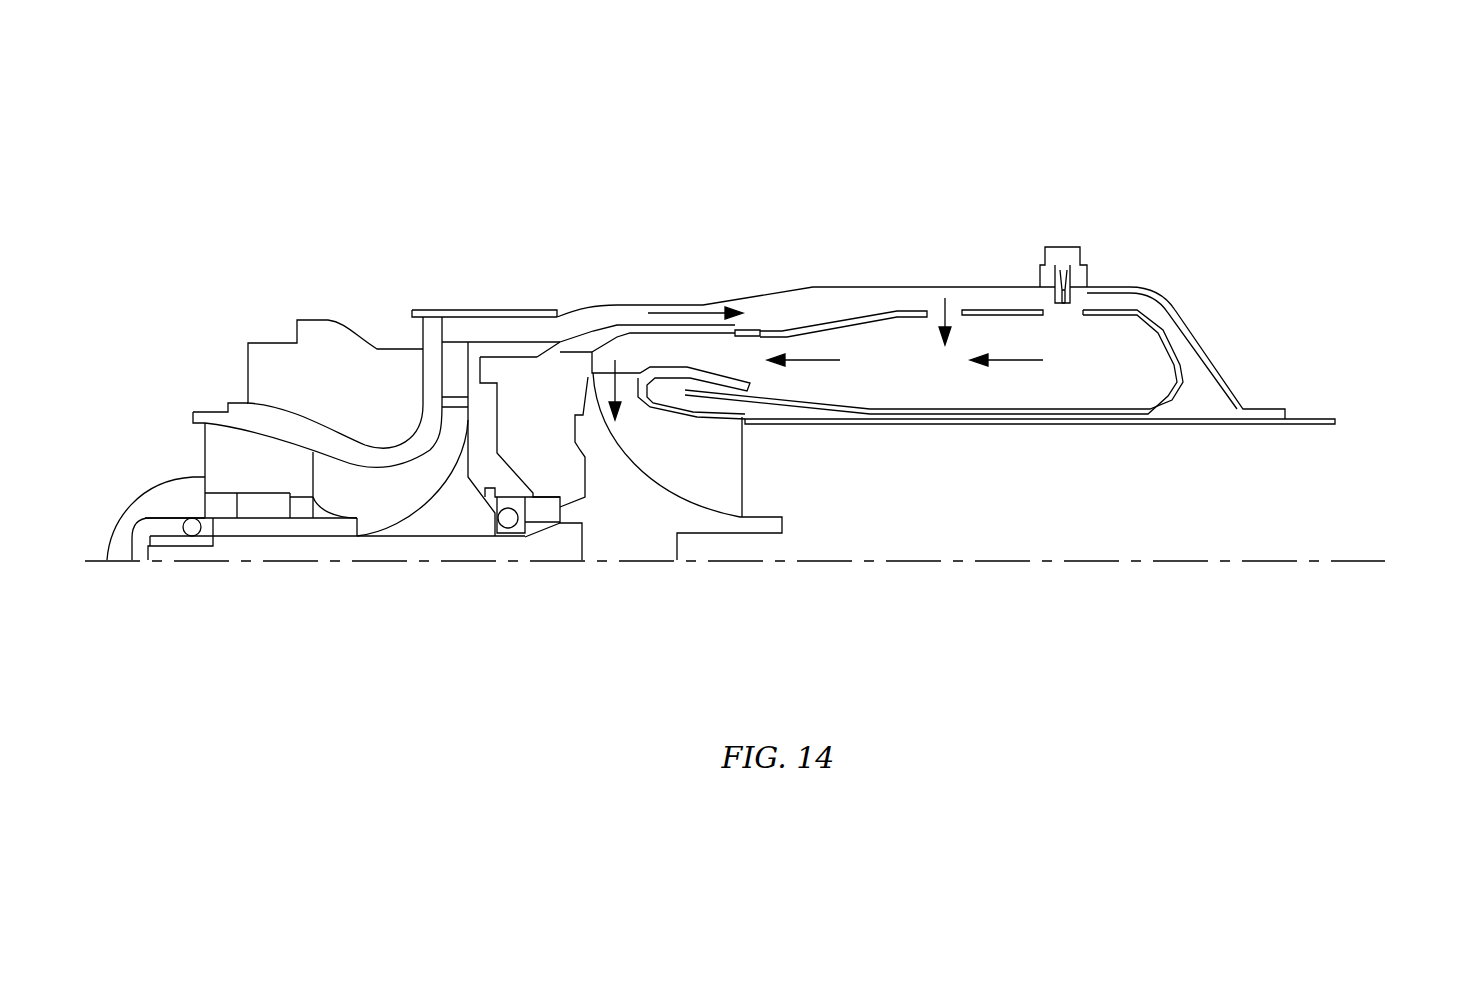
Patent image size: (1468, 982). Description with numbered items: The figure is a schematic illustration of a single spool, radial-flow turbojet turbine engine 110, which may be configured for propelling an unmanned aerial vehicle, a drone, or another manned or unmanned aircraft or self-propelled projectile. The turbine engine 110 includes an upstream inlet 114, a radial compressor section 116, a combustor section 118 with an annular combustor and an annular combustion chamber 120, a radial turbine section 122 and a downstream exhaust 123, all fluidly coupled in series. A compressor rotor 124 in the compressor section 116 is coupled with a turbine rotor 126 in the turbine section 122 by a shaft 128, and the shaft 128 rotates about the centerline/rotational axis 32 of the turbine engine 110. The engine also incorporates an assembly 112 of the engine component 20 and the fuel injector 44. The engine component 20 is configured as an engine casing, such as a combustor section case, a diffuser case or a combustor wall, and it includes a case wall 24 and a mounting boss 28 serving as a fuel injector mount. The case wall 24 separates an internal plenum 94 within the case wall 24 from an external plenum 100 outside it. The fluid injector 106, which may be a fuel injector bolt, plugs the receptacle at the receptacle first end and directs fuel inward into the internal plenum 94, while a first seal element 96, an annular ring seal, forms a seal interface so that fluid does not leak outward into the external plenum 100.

The turbine engine 110 is at (258, 247).
The external plenum 100 is at (808, 223).
The engine component 20 is at (937, 270).
The combustor section 118 is at (990, 308).
The fuel injector 44 is at (1065, 245).
The fluid injector 106 is at (1065, 245).
The assembly 112 is at (1113, 265).
The mounting boss 28 is at (1085, 278).
The internal plenum 94 is at (1112, 299).
The case wall 24 is at (1207, 344).
The first seal element 96 is at (1063, 306).
The combustion chamber 120 is at (922, 392).
The downstream exhaust 123 is at (1350, 486).
The centerline/rotational axis 32 is at (1383, 563).
The upstream inlet 114 is at (211, 452).
The shaft 128 is at (344, 548).
The compressor rotor 124 is at (448, 523).
The compressor section 116 is at (427, 580).
The turbine section 122 is at (681, 584).
The turbine rotor 126 is at (713, 528).